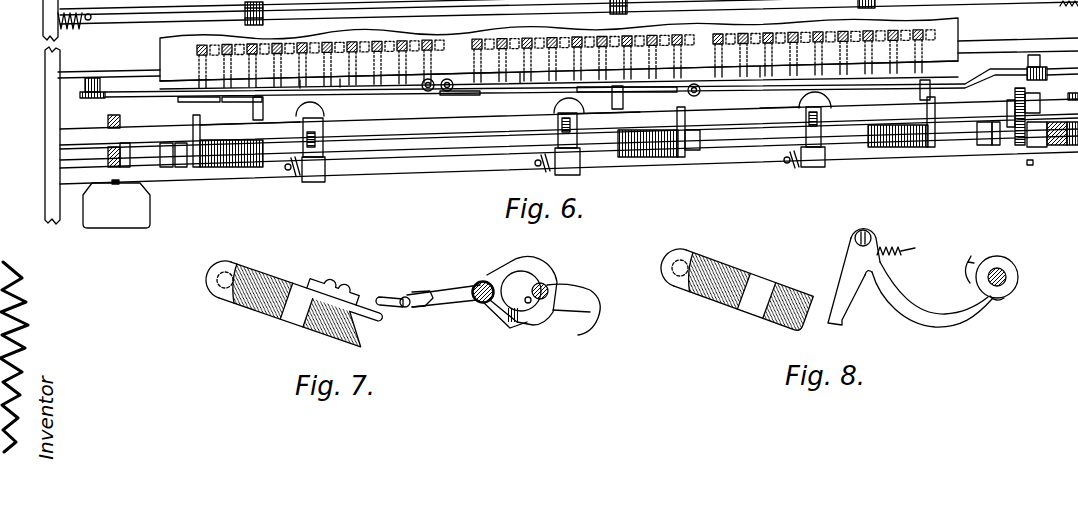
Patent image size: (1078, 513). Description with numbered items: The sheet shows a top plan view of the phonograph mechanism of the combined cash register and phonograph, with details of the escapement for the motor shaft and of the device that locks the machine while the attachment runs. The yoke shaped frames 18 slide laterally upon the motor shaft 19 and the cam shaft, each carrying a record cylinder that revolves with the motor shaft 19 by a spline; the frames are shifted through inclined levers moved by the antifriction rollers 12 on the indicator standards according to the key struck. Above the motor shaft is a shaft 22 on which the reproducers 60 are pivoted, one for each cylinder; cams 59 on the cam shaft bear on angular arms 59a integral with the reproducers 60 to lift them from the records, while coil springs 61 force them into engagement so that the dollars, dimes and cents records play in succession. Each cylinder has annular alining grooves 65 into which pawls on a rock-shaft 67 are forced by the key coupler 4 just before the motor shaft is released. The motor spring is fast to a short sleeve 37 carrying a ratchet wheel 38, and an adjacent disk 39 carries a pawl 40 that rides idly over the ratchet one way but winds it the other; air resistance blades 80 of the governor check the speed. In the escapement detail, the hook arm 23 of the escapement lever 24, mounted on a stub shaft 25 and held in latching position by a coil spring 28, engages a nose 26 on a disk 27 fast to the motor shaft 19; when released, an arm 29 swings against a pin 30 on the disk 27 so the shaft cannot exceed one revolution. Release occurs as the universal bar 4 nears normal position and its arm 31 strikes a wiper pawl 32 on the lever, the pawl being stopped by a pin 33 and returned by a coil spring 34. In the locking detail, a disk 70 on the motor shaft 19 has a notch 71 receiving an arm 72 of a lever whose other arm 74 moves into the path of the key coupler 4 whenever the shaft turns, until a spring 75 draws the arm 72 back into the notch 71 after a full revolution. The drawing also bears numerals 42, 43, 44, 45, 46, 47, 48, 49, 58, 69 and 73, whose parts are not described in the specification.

In FIG. 7, the universal bar or key coupler 4 is at (278, 306).
In FIG. 8, the universal bar or key coupler 4 is at (742, 303).
In FIG. 6, the antifriction roller 12 is at (412, 89).
In FIG. 6, the yoke shaped frame 18 is at (58, 156).
In FIG. 7, the motor shaft 19 is at (555, 348).
In FIG. 6, the shaft 22 is at (428, 178).
In FIG. 7, the hook arm 23 is at (512, 261).
In FIG. 7, the escapement lever 24 is at (450, 303).
In FIG. 7, the stub shaft 25 is at (497, 322).
In FIG. 7, the nose 26 is at (532, 272).
In FIG. 6, the disk 27 is at (278, 160).
In FIG. 7, the disk 27 is at (551, 284).
In FIG. 7, the coil spring 28 is at (479, 283).
In FIG. 7, the arm 29 is at (537, 322).
In FIG. 7, the pin 30 is at (548, 303).
In FIG. 7, the arm 31 is at (333, 288).
In FIG. 7, the wiper pawl 32 is at (389, 296).
In FIG. 7, the pin 33 is at (422, 292).
In FIG. 7, the coil spring 34 is at (405, 307).
In FIG. 6, the short sleeve 37 is at (1050, 138).
In FIG. 6, the ratchet wheel 38 is at (1058, 146).
In FIG. 6, the disk 39 is at (1072, 92).
In FIG. 6, the pawl 40 is at (183, 99).
In FIG. 6, the type basket 42 is at (212, 60).
In FIG. 6, the rack 43 is at (385, 89).
In FIG. 6, the type heads 44 is at (465, 46).
In FIG. 6, the rollers 45 is at (433, 92).
In FIG. 6, the rod 46 is at (945, 90).
In FIG. 6, the post 47 is at (330, 88).
In FIG. 6, the flange 48 is at (192, 131).
In FIG. 8, the pin 49 is at (1003, 270).
In FIG. 6, the gear 58 is at (1020, 140).
In FIG. 6, the cams 59 is at (560, 122).
In FIG. 6, the angular arms 59a is at (303, 124).
In FIG. 6, the reproducers 60 is at (560, 108).
In FIG. 6, the coil springs 61 is at (300, 180).
In FIG. 6, the annular alining grooves 65 is at (225, 168).
In FIG. 6, the rock-shaft 67 is at (1012, 2).
In FIG. 6, the ratchet 69 is at (1055, 3).
In FIG. 6, the disk 70 is at (984, 146).
In FIG. 8, the disk 70 is at (993, 259).
In FIG. 8, the notch 71 is at (1003, 298).
In FIG. 8, the arm 72 is at (943, 323).
In FIG. 8, the pivot screw 73 is at (855, 242).
In FIG. 8, the arm 74 is at (842, 323).
In FIG. 8, the spring 75 is at (908, 250).
In FIG. 6, the air resistance blades 80 is at (120, 226).